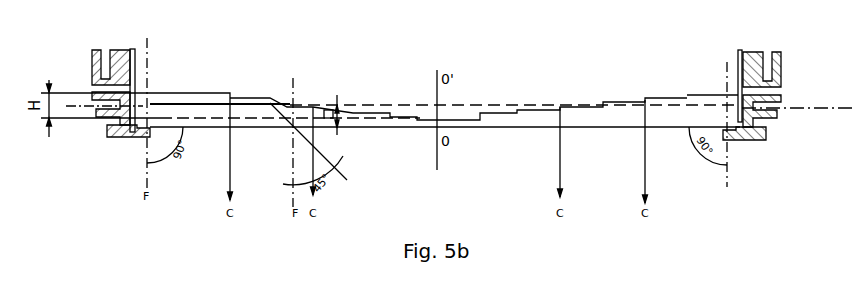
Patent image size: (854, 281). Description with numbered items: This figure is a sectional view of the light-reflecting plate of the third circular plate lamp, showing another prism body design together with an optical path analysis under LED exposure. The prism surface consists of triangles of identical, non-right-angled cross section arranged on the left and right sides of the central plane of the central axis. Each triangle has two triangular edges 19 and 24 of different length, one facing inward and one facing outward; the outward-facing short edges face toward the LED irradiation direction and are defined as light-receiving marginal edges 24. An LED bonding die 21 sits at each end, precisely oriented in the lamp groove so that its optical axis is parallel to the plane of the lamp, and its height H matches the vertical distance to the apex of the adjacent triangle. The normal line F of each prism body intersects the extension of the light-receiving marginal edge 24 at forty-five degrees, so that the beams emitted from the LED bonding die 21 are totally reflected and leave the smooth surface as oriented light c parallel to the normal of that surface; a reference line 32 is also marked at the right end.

The triangular edge 19 is at (172, 93).
The LED bonding die 21 is at (140, 102).
The light-receiving marginal edge 24 is at (187, 95).
The axis line 32 is at (790, 108).